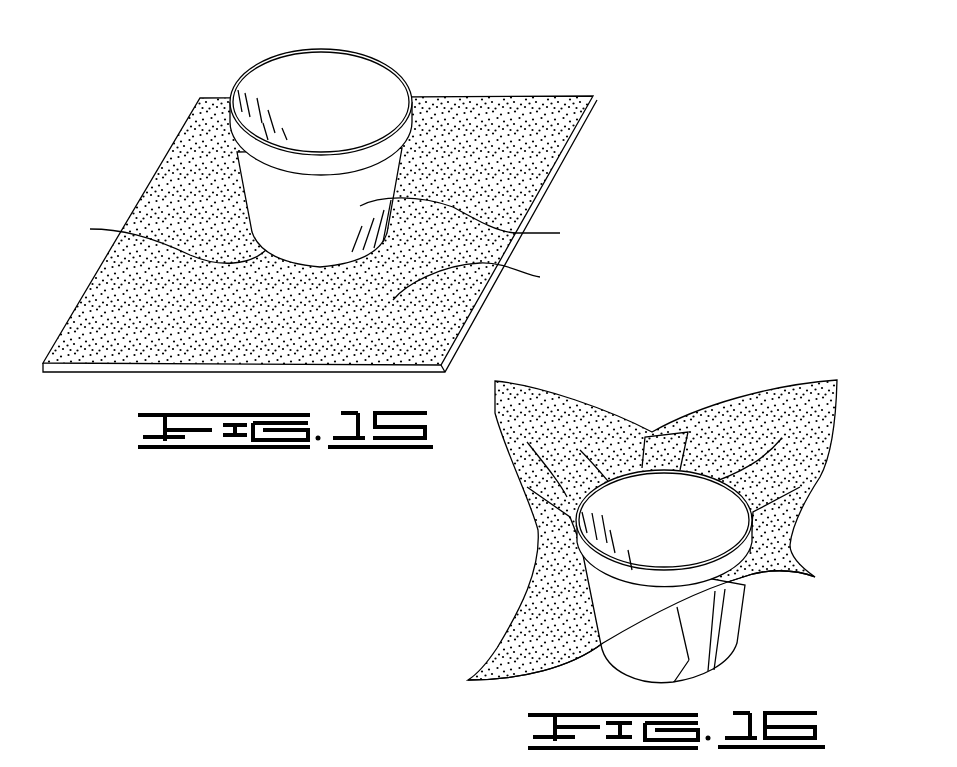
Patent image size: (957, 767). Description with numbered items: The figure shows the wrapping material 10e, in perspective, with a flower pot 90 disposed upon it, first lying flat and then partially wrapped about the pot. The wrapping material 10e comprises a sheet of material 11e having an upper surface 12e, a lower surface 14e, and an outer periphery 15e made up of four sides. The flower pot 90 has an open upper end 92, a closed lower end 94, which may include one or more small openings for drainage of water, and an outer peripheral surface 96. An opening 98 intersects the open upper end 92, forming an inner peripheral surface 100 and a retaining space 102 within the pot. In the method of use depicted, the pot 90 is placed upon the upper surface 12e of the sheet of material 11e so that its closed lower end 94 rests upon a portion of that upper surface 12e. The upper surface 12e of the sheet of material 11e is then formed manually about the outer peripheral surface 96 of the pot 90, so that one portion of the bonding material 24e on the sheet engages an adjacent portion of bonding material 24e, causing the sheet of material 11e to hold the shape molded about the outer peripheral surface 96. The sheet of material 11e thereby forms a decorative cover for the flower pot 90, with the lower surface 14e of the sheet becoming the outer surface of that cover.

In FIG. 15, the wrapping material 10e is at (348, 210).
In FIG. 16, the wrapping material 10e is at (664, 515).
In FIG. 15, the sheet of material 11e is at (348, 254).
In FIG. 16, the sheet of material 11e is at (664, 503).
In FIG. 15, the upper surface 12e is at (517, 158).
In FIG. 16, the upper surface 12e is at (788, 410).
In FIG. 16, the lower surface 14e is at (735, 603).
In FIG. 15, the outer periphery 15e is at (145, 373).
In FIG. 15, the bonding material 24e is at (491, 281).
In FIG. 16, the bonding material 24e is at (547, 613).
In FIG. 15, the flower pot 90 is at (306, 137).
In FIG. 16, the flower pot 90 is at (662, 523).
In FIG. 15, the open upper end 92 is at (322, 47).
In FIG. 16, the open upper end 92 is at (664, 520).
In FIG. 15, the closed lower end 94 is at (160, 240).
In FIG. 15, the outer peripheral surface 96 is at (476, 223).
In FIG. 16, the outer peripheral surface 96 is at (627, 628).
In FIG. 15, the opening 98 is at (400, 72).
In FIG. 16, the opening 98 is at (735, 494).
In FIG. 15, the inner peripheral surface 100 is at (280, 74).
In FIG. 16, the inner peripheral surface 100 is at (664, 520).
In FIG. 15, the retaining space 102 is at (307, 112).
In FIG. 16, the retaining space 102 is at (611, 522).